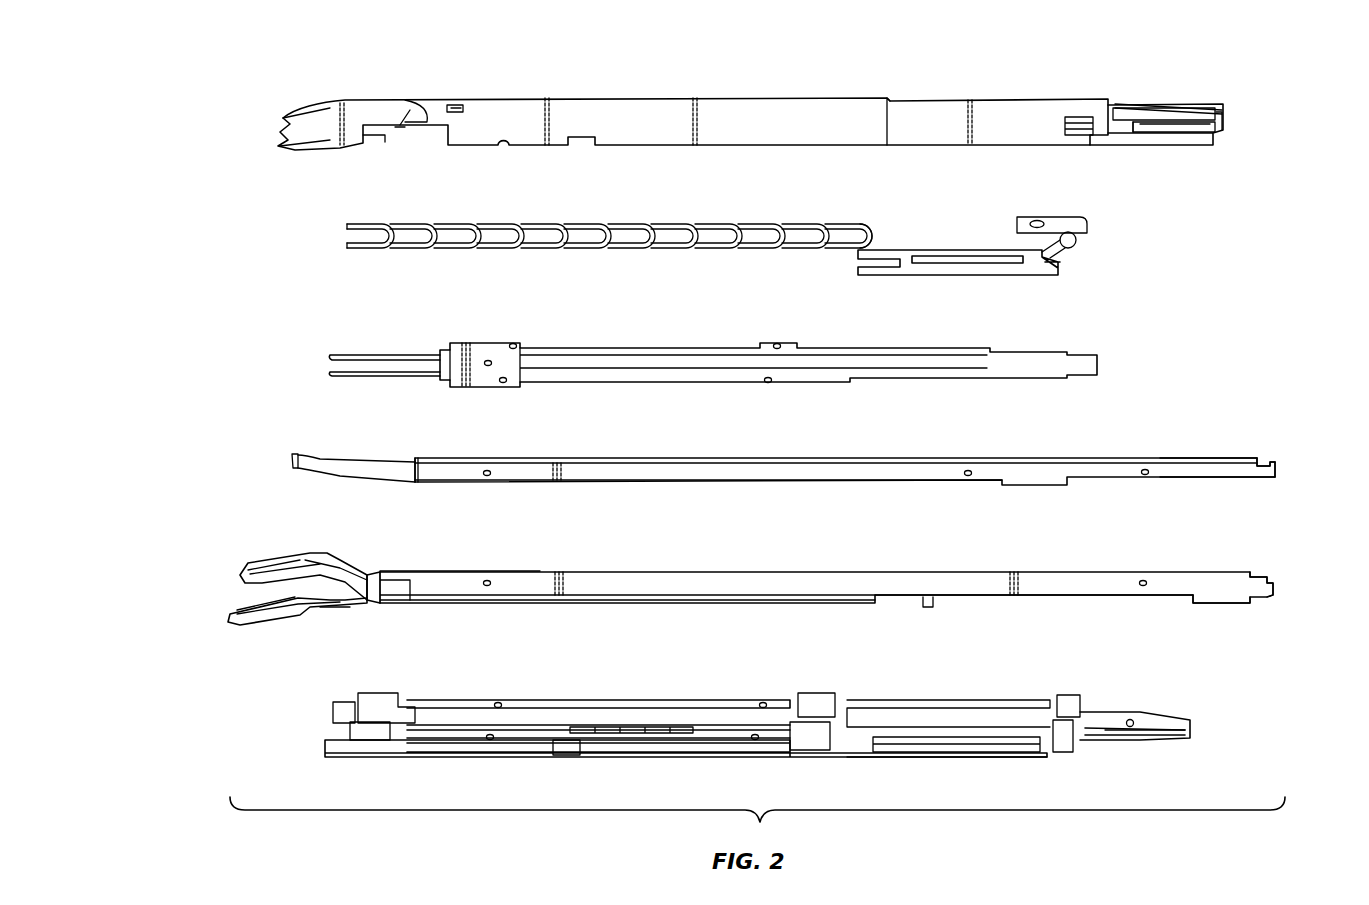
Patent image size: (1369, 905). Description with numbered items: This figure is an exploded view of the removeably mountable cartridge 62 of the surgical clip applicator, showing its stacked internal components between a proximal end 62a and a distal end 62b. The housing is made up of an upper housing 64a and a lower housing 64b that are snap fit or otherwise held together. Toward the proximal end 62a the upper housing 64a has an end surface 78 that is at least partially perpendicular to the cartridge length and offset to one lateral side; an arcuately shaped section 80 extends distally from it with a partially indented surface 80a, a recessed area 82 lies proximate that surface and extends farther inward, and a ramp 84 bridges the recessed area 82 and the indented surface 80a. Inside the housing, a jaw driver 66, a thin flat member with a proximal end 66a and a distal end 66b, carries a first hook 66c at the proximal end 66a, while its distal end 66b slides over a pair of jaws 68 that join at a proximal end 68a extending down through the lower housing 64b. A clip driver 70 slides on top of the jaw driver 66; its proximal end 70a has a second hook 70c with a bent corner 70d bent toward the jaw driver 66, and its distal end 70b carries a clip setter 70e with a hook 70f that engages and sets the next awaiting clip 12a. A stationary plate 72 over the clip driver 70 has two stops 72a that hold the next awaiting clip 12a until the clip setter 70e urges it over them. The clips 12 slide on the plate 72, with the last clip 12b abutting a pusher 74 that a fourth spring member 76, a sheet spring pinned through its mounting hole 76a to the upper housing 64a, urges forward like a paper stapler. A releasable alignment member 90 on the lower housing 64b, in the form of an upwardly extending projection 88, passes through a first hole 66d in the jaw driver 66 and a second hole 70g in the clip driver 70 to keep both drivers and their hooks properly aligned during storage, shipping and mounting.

The cartridge 62 is at (1022, 54).
The proximal end 62a is at (1216, 104).
The distal end 62b is at (318, 114).
The upper housing 64a is at (727, 106).
The lower housing 64b is at (962, 753).
The ramp 84 is at (1121, 120).
The recessed area 82 is at (1187, 111).
The end surface 78 is at (1220, 130).
The arcuately shaped section 80 is at (1193, 138).
The indented surface 80a is at (1153, 128).
The clips 12 is at (408, 225).
The next awaiting clip 12a is at (358, 252).
The last clip 12b is at (840, 222).
The pusher 74 is at (1028, 262).
The fourth spring member 76 is at (1077, 242).
The mounting hole 76a is at (1037, 217).
The plate 72 is at (733, 352).
The stops 72a is at (372, 360).
The clip driver 70 is at (665, 472).
The proximal end 70a is at (1220, 470).
The distal end 70b is at (415, 462).
The second hook 70c is at (1277, 467).
The bent corner 70d is at (1275, 462).
The clip setter 70e is at (345, 474).
The hook 70f is at (297, 455).
The second hole 70g is at (1143, 468).
The jaw driver 66 is at (960, 583).
The proximal end 66a is at (1222, 592).
The distal end 66b is at (427, 583).
The first hook 66c is at (1267, 580).
The first hole 66d is at (1143, 580).
The jaws 68 is at (253, 567).
The proximal end 68a is at (930, 606).
The projection 88 is at (1132, 720).
The alignment member 90 is at (1136, 738).